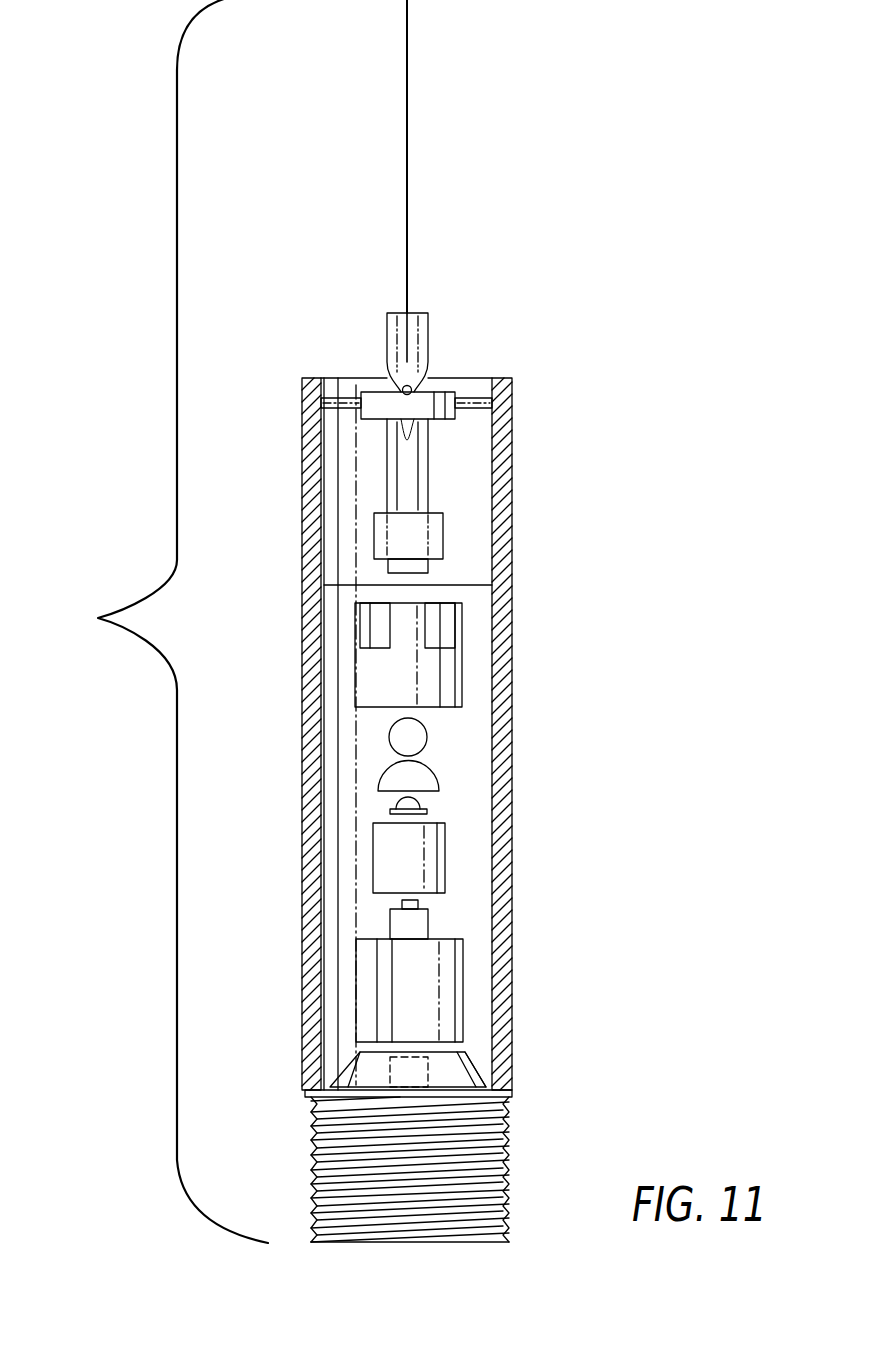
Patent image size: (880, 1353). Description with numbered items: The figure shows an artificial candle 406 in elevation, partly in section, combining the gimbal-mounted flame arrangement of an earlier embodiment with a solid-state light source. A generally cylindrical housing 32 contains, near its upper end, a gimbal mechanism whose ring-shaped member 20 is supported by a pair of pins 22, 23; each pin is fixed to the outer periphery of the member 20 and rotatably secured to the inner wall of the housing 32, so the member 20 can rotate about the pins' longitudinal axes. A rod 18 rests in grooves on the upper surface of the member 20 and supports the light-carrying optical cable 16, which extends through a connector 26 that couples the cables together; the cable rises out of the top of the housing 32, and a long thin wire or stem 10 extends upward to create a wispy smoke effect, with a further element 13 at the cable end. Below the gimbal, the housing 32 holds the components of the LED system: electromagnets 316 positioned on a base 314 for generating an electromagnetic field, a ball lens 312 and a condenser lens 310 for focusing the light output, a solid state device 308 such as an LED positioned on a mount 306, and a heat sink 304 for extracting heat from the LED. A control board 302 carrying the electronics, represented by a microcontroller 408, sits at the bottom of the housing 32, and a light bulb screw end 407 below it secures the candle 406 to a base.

The wire or stem 10 is at (407, 90).
The cable end 13 is at (407, 305).
The optical cable 16 is at (387, 338).
The rod 18 is at (410, 386).
The ring-shaped member 20 is at (441, 413).
The pin 22 is at (343, 410).
The pin 23 is at (463, 398).
The connector 26 is at (433, 537).
The housing 32 is at (513, 607).
The control board 302 is at (347, 1063).
The heat sink 304 is at (356, 990).
The mount 306 is at (373, 857).
The solid state device 308 is at (390, 812).
The condenser lens 310 is at (380, 780).
The ball lens 312 is at (388, 737).
The base 314 is at (462, 662).
The electromagnets 316 is at (437, 627).
The artificial candle 406 is at (73, 630).
The light bulb screw end 407 is at (325, 1177).
The microcontroller 408 is at (413, 1072).